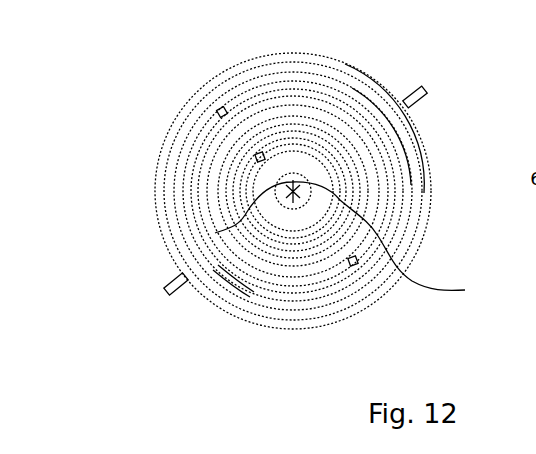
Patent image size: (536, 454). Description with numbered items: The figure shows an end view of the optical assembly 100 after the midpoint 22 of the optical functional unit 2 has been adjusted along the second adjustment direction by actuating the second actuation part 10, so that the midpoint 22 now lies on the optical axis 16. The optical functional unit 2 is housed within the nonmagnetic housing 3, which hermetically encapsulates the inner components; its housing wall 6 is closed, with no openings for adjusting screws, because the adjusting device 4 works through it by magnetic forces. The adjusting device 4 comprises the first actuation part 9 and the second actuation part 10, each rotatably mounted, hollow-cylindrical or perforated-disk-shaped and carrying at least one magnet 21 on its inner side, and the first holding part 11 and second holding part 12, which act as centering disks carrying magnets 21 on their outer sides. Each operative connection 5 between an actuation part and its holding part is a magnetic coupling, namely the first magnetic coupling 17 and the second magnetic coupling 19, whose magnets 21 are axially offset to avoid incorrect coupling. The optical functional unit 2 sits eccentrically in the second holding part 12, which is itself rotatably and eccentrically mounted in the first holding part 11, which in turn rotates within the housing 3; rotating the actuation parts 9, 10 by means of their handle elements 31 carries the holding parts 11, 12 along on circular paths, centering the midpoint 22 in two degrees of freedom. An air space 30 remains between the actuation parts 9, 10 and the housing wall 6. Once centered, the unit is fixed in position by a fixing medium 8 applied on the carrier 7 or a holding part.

The optical assembly 100 is at (438, 138).
The optical functional unit 2 is at (293, 191).
The housing 3 is at (293, 191).
The adjusting device 4 is at (220, 70).
The operative connection 5 is at (450, 80).
The housing wall 6 is at (232, 202).
The carrier 7 is at (346, 242).
The fixing medium 8 is at (339, 119).
The first actuation part 9 is at (330, 312).
The second actuation part 10 is at (196, 138).
The first holding part 11 is at (262, 145).
The second holding part 12 is at (308, 168).
The optical axis 16 is at (293, 192).
The first magnetic coupling 17 is at (449, 221).
The second magnetic coupling 19 is at (163, 71).
The magnet 21 is at (223, 110).
The midpoint 22 is at (215, 233).
The air space 30 is at (268, 267).
The handle element 31 is at (165, 280).